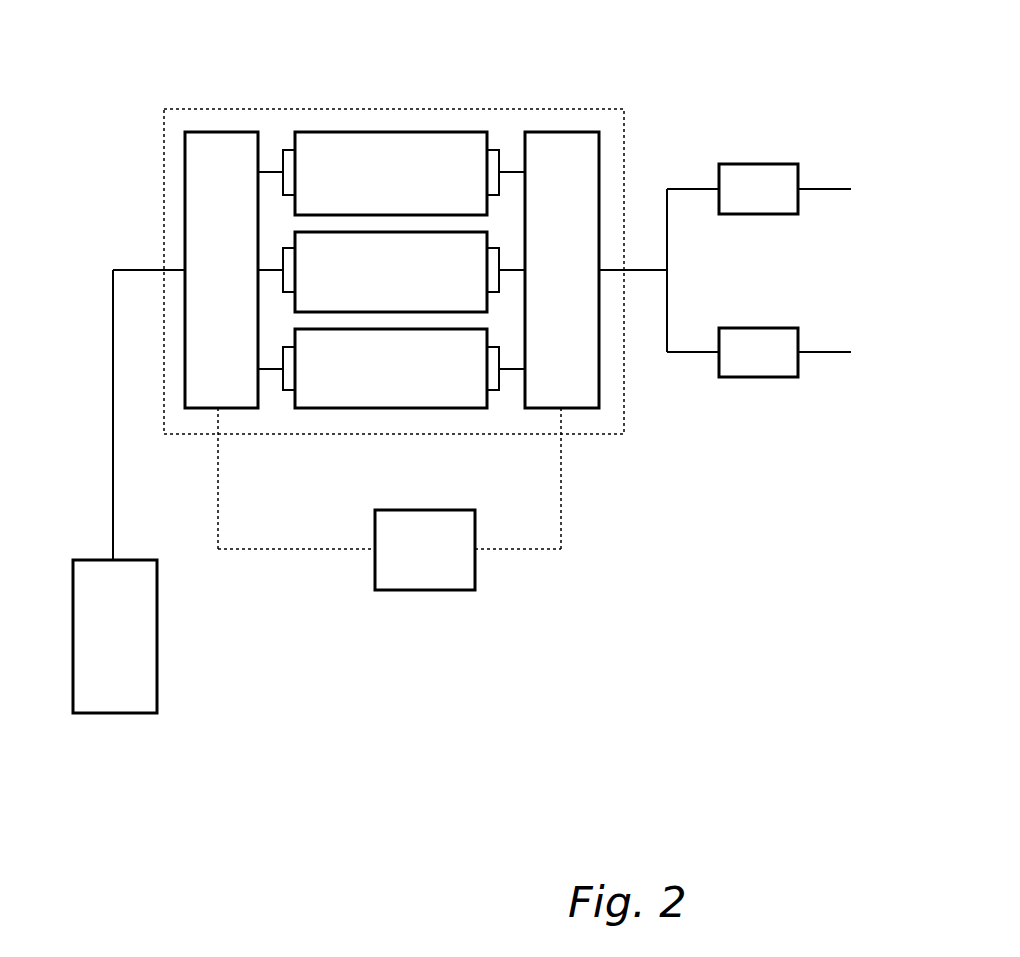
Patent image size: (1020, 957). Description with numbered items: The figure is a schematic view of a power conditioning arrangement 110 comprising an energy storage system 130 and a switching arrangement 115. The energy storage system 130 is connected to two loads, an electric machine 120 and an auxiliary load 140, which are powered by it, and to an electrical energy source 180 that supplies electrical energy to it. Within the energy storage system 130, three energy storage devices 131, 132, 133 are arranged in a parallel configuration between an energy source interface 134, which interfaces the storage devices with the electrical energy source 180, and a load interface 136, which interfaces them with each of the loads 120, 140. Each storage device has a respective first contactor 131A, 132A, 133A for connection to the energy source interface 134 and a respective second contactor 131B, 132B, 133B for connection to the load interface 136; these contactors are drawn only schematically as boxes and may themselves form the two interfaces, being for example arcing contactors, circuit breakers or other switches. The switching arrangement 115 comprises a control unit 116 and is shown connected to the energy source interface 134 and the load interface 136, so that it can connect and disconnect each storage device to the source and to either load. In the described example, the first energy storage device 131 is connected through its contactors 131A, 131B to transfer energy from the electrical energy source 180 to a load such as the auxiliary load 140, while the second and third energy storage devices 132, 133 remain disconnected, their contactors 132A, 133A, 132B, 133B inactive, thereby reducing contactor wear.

The power conditioning arrangement 110 is at (667, 662).
The switching arrangement 115 is at (466, 662).
The control unit 116 is at (412, 590).
The electric machine 120 is at (772, 164).
The energy storage system 130 is at (604, 434).
The first energy storage device 131 is at (415, 188).
The first contactor of the first energy storage device 131A is at (272, 150).
The second contactor of the first energy storage device 131B is at (511, 158).
The second energy storage device 132 is at (415, 285).
The first contactor of the second energy storage device 132A is at (282, 268).
The second contactor of the second energy storage device 132B is at (499, 268).
The third energy storage device 133 is at (415, 382).
The first contactor of the third energy storage device 133A is at (292, 392).
The second contactor of the third energy storage device 133B is at (490, 392).
The energy source interface 134 is at (222, 132).
The load interface 136 is at (575, 132).
The auxiliary load 140 is at (770, 378).
The electrical energy source 180 is at (135, 713).